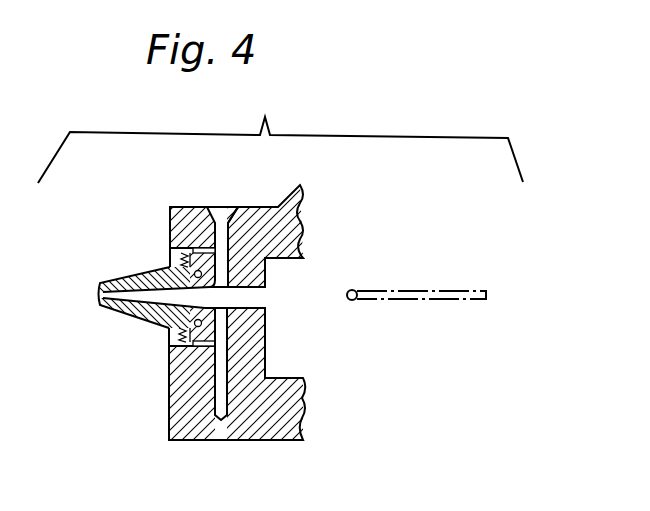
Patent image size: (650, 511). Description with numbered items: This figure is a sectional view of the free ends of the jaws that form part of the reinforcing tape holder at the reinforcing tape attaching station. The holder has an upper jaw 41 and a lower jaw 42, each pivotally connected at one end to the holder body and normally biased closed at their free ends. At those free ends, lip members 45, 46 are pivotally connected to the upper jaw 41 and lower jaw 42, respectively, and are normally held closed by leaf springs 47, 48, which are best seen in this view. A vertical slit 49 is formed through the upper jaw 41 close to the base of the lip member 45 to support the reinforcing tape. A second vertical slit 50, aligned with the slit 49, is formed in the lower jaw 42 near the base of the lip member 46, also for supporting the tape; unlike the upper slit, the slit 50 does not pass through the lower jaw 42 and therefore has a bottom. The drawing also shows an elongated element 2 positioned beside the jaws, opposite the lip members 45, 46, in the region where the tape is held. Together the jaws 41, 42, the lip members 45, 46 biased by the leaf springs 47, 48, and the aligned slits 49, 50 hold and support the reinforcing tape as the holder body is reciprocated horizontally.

The wire element 2 is at (413, 303).
The upper jaw 41 is at (272, 207).
The lower jaw 42 is at (293, 378).
The lip member 45 is at (170, 266).
The lip member 46 is at (133, 313).
The leaf spring 47 is at (190, 207).
The leaf spring 48 is at (169, 346).
The vertical slit 49 is at (228, 207).
The vertical slit 50 is at (218, 419).